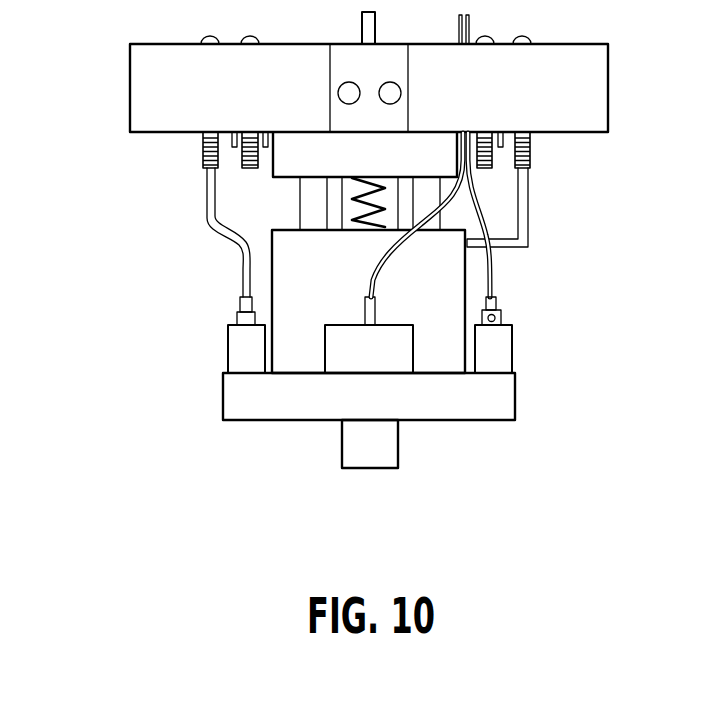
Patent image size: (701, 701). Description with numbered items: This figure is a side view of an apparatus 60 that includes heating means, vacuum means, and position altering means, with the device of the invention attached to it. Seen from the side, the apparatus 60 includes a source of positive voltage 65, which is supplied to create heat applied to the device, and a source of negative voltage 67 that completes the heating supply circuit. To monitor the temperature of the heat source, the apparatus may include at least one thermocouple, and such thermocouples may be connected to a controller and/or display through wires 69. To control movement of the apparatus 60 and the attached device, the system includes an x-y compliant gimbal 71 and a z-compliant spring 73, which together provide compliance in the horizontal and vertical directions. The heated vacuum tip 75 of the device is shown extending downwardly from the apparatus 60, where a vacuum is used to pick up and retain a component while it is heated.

The apparatus 60 is at (147, 382).
The source of positive voltage 65 is at (243, 253).
The source of negative voltage 67 is at (527, 214).
The wires 69 is at (373, 283).
The x-y compliant gimbal 71 is at (305, 406).
The z-compliant spring 73 is at (355, 222).
The heated vacuum tip 75 is at (362, 470).